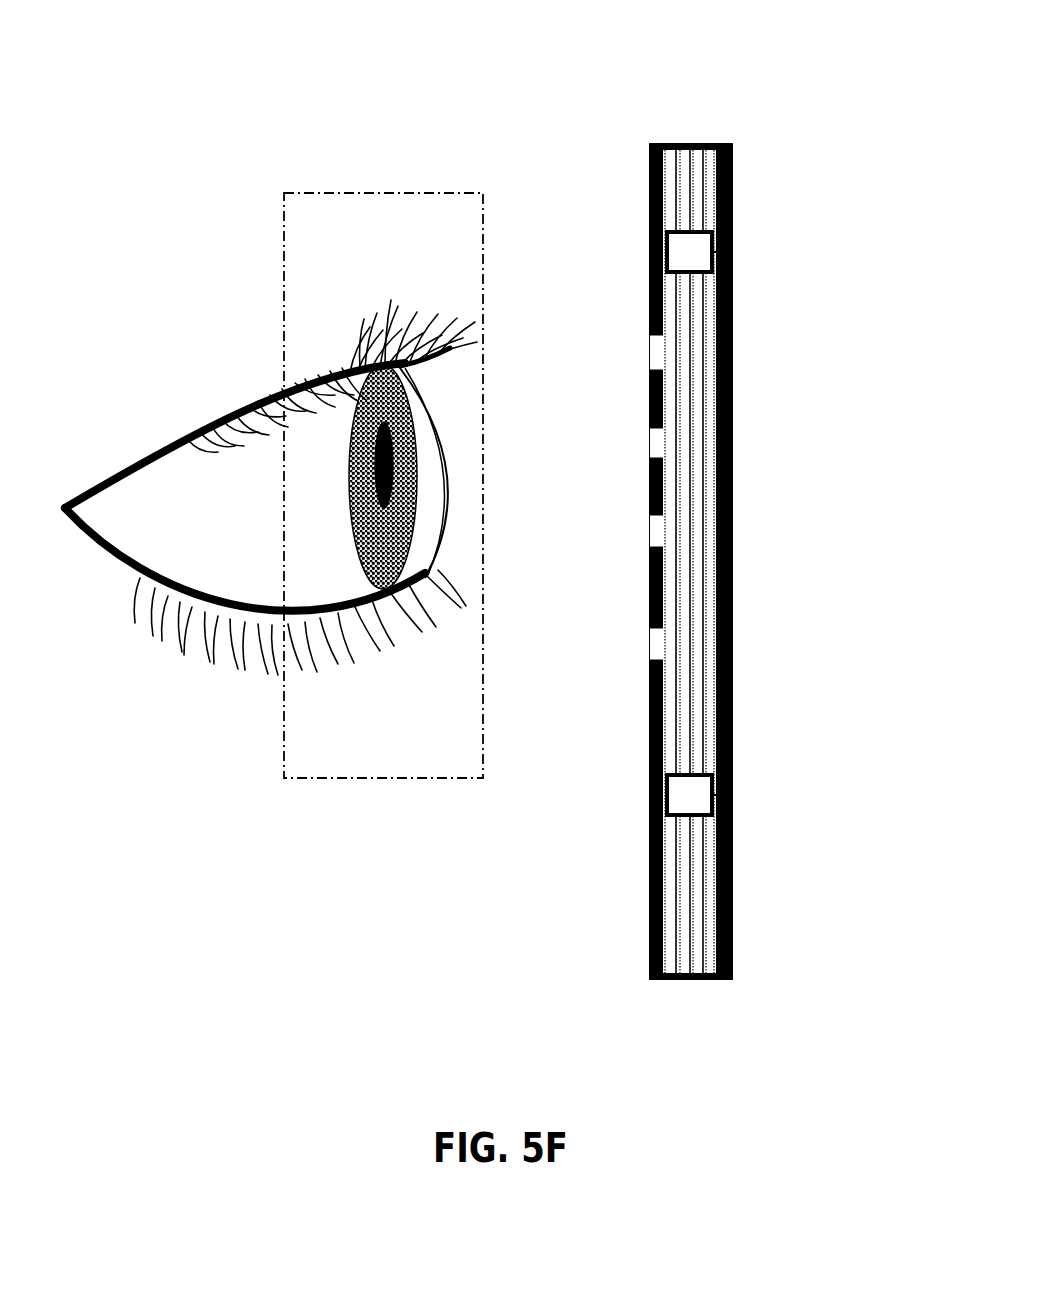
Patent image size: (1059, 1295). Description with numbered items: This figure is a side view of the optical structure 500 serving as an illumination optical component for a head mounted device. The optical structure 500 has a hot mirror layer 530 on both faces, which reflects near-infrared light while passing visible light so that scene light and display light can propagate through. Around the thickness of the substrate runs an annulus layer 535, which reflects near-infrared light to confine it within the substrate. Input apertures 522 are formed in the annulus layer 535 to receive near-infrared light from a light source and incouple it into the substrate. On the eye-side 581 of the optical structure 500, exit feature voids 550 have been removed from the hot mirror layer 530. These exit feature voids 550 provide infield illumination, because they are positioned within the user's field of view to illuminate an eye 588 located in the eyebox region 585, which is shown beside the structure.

The optical structure 500 is at (865, 45).
The hot mirror layer 530 is at (650, 143).
The annulus layer 535 is at (692, 175).
The input aperture 522 is at (733, 262).
The exit feature void 550 is at (640, 355).
The eye-side 581 is at (628, 268).
The eyebox region 585 is at (284, 778).
The eye 588 is at (178, 371).